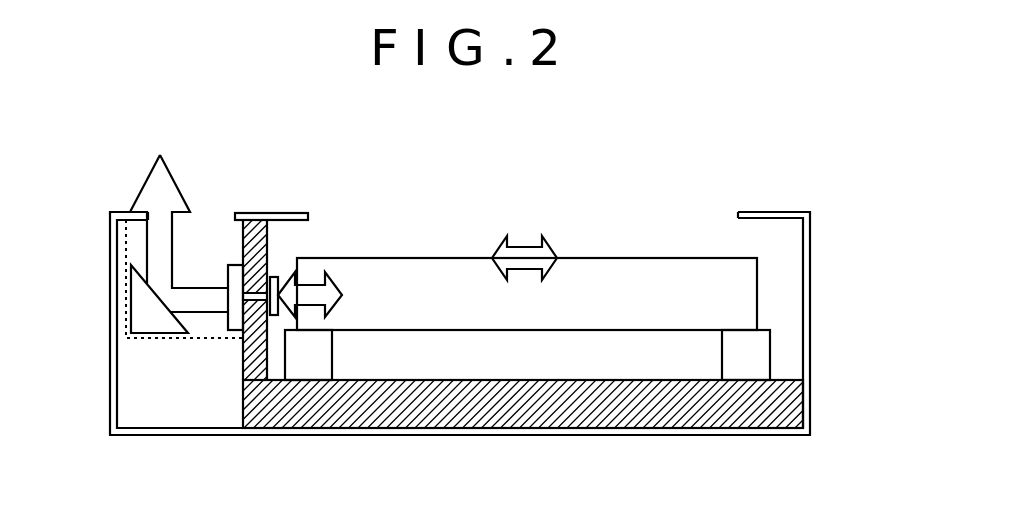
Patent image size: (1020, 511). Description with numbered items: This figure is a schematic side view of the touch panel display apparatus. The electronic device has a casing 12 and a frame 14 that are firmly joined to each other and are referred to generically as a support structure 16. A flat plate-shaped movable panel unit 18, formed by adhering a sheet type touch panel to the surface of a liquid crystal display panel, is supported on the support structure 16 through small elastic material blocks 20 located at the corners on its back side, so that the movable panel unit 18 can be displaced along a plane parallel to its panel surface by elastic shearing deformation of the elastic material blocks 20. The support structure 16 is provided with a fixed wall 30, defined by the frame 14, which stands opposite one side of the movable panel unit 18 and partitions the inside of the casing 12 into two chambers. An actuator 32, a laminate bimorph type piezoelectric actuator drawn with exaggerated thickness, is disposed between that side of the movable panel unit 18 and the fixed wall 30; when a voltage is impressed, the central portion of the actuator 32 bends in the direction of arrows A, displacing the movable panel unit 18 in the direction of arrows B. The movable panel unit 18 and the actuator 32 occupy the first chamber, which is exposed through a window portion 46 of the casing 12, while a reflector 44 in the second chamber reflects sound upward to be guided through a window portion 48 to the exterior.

The casing 12 is at (812, 262).
The frame 14 is at (523, 403).
The support structure 16 is at (673, 448).
The movable panel unit 18 is at (663, 273).
The elastic material blocks 20 is at (750, 355).
The fixed wall 30 is at (257, 235).
The actuator 32 is at (276, 272).
The reflector 44 is at (138, 316).
The window portion 46 is at (607, 228).
The window portion 48 is at (207, 222).
The arrows A is at (308, 293).
The arrows B is at (520, 252).